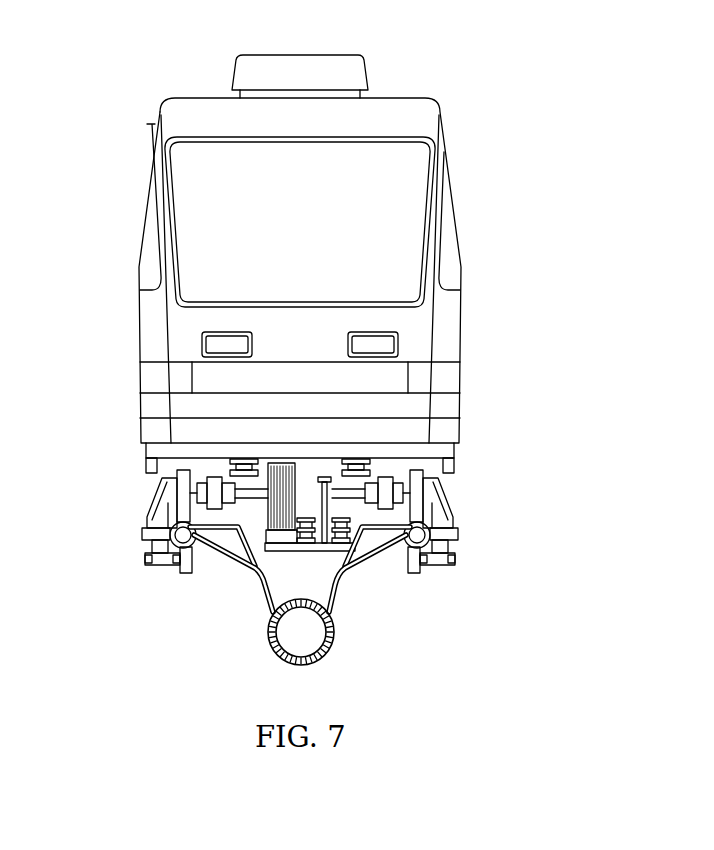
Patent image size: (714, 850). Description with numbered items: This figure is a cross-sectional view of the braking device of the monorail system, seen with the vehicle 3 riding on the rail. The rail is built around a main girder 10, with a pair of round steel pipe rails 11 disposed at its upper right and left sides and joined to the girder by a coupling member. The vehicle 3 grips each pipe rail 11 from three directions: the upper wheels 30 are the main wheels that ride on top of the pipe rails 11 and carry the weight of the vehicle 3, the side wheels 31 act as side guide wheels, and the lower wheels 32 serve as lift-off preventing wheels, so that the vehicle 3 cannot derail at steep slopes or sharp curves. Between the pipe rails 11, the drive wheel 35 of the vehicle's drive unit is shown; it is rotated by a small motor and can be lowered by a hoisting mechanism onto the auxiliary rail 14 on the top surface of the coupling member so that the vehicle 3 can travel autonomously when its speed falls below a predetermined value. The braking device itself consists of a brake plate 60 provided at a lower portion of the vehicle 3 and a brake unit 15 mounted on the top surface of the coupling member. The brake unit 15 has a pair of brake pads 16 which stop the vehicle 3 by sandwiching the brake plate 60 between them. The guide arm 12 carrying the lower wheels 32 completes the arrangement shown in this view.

The vehicle 3 is at (417, 325).
The main girder 10 is at (300, 632).
The pipe rails 11 is at (147, 518).
The guide arm 12 is at (285, 588).
The auxiliary rail 14 is at (255, 568).
The brake unit 15 is at (357, 550).
The brake pads 16 is at (322, 541).
The upper wheels 30 is at (183, 495).
The side wheels 31 is at (153, 535).
The lower wheels 32 is at (182, 562).
The drive wheel 35 is at (267, 517).
The brake plate 60 is at (323, 507).